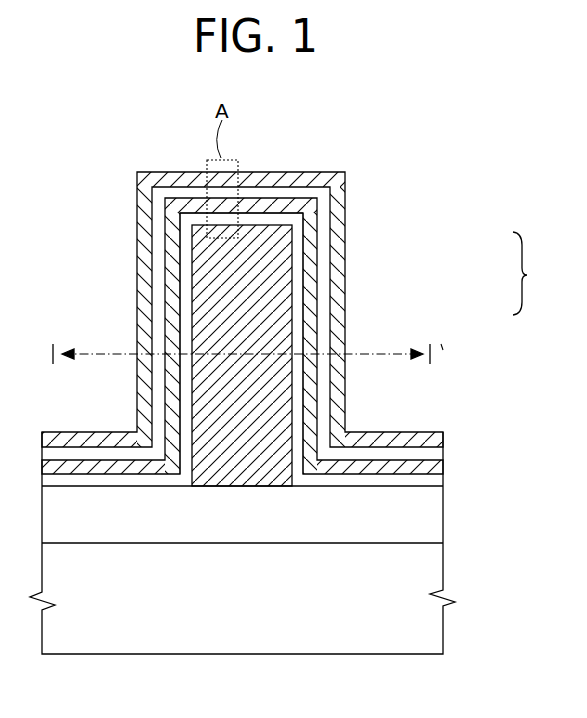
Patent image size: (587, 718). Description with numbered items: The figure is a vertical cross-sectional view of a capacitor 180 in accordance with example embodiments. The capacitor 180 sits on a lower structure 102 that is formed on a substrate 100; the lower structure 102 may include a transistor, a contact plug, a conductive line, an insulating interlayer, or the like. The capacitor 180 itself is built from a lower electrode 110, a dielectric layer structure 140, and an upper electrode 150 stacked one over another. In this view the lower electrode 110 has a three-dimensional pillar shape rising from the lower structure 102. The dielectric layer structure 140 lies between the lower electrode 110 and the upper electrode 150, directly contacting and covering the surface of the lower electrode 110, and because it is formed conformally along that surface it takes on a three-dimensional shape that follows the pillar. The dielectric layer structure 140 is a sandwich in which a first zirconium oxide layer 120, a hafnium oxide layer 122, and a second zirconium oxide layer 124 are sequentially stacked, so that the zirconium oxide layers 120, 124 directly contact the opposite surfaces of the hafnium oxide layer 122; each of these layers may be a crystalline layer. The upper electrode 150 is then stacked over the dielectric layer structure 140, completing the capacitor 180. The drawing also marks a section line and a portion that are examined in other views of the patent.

The substrate 100 is at (433, 630).
The lower structure 102 is at (432, 510).
The lower electrode 110 is at (277, 392).
The first zirconium oxide layer 120 is at (296, 308).
The hafnium oxide layer 122 is at (306, 276).
The second zirconium oxide layer 124 is at (322, 243).
The dielectric layer structure 140 is at (539, 273).
The upper electrode 150 is at (345, 187).
The capacitor 180 is at (303, 312).